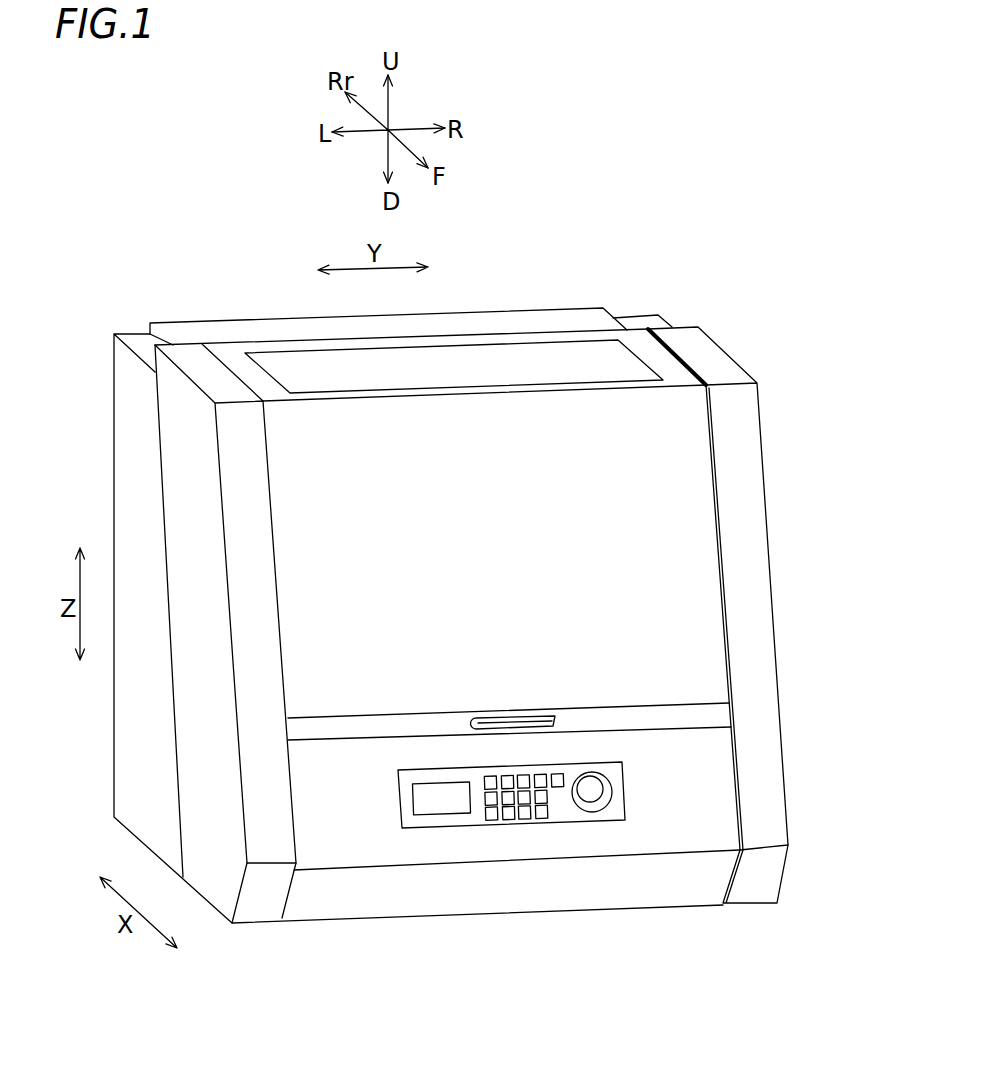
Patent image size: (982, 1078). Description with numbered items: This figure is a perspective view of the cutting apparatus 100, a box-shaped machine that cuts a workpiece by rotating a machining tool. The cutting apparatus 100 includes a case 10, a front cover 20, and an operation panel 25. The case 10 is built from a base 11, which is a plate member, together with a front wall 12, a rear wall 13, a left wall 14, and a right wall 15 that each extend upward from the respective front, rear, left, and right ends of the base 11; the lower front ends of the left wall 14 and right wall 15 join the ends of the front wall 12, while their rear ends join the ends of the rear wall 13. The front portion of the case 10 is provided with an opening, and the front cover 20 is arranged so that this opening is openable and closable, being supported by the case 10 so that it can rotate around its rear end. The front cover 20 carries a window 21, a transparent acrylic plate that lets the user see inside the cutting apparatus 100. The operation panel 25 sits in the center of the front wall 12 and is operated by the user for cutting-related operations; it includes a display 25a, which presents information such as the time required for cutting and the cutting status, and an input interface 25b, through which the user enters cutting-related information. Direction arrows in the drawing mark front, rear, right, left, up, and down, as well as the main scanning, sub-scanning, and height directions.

The cutting apparatus 100 is at (710, 273).
The case 10 is at (803, 453).
The base 11 is at (573, 915).
The front wall 12 is at (637, 727).
The rear wall 13 is at (552, 308).
The left wall 14 is at (112, 770).
The right wall 15 is at (768, 527).
The front cover 20 is at (665, 728).
The window 21 is at (348, 720).
The operation panel 25 is at (597, 835).
The display 25a is at (443, 818).
The input interface 25b is at (580, 771).